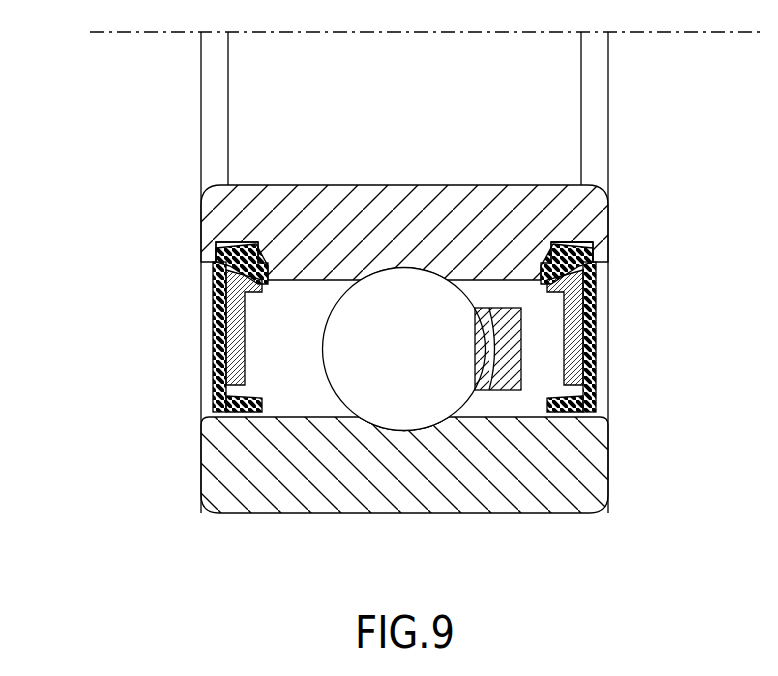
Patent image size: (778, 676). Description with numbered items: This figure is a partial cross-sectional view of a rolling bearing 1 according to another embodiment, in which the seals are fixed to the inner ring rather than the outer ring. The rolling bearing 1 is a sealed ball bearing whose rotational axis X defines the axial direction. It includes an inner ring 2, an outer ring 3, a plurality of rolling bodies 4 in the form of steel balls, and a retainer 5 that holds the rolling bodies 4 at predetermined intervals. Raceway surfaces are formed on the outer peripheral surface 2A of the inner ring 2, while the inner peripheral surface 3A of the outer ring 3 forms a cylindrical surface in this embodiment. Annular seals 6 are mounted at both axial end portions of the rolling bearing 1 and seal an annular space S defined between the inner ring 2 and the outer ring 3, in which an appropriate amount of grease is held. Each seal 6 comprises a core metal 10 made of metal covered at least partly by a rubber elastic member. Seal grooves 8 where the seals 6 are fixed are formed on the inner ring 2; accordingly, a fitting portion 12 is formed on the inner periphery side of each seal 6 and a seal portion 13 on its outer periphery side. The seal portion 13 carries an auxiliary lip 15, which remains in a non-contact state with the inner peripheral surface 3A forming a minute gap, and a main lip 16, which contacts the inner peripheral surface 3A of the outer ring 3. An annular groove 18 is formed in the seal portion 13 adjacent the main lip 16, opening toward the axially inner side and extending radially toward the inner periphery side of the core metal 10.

The rolling bearing 1 is at (666, 160).
The inner ring 2 is at (368, 236).
The outer peripheral surface of the inner ring 2A is at (310, 282).
The outer ring 3 is at (573, 450).
The inner peripheral surface of the outer ring 3A is at (332, 417).
The rolling body 4 is at (430, 303).
The retainer 5 is at (502, 308).
The seal for rolling bearing 6 is at (216, 371).
The seal groove 8 is at (588, 248).
The core metal 10 is at (216, 318).
The fitting portion 12 is at (594, 222).
The seal portion 13 is at (221, 394).
The auxiliary lip 15 is at (232, 408).
The main lip 16 is at (312, 417).
The annular groove 18 is at (333, 400).
The annular space S is at (283, 322).
The rotational axis X is at (135, 34).